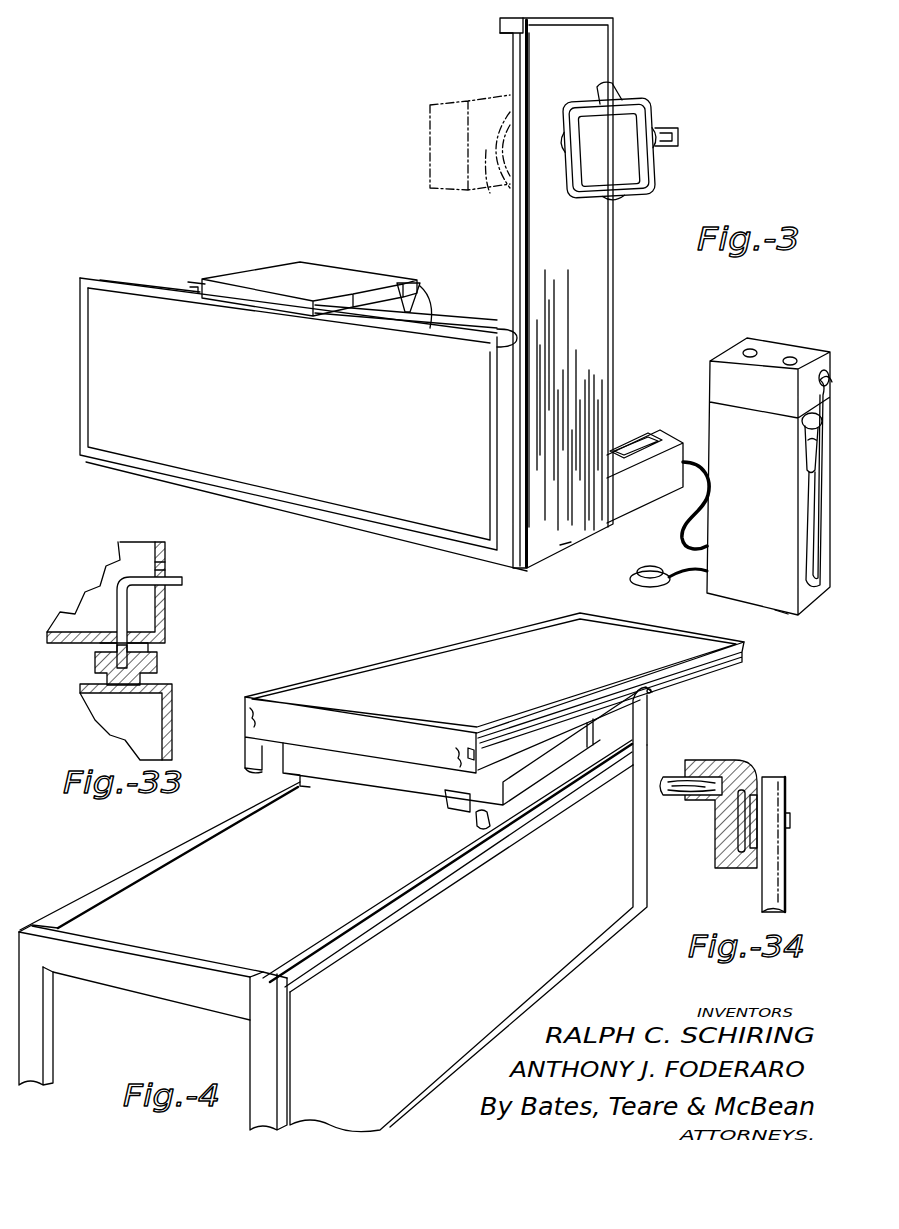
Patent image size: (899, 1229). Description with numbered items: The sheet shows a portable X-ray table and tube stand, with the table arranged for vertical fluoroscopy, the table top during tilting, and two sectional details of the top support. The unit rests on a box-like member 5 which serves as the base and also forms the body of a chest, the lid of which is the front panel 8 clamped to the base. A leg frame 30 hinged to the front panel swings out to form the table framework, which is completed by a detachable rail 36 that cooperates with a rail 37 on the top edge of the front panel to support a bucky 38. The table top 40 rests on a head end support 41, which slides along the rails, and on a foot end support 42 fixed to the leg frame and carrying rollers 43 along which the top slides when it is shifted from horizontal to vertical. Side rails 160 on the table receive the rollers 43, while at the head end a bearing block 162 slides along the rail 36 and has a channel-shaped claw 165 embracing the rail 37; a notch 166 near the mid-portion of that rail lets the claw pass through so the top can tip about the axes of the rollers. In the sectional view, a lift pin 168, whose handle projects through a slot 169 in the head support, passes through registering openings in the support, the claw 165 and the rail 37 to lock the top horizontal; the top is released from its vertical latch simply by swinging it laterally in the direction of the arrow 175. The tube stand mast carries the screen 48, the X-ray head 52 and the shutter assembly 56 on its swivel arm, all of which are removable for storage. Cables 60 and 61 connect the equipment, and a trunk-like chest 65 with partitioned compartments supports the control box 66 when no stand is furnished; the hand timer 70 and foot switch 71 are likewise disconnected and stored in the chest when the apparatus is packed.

In FIG. 3, the box-like member 5 is at (652, 437).
In FIG. 3, the front panel 8 is at (96, 350).
In FIG. 4, the front panel 8 is at (573, 968).
In FIG. 3, the leg frame 30 is at (192, 280).
In FIG. 4, the leg frame 30 is at (33, 1027).
In FIG. 3, the detachable rail 36 is at (455, 318).
In FIG. 4, the detachable rail 36 is at (203, 846).
In FIG. 3, the rail 37 is at (103, 278).
In FIG. 4, the rail 37 is at (415, 864).
In FIG. 33, the rail 37 is at (96, 666).
In FIG. 3, the bucky 38 is at (340, 271).
In FIG. 4, the bucky 38 is at (380, 790).
In FIG. 3, the table top 40 is at (597, 44).
In FIG. 4, the table top 40 is at (470, 647).
In FIG. 33, the table top 40 is at (173, 704).
In FIG. 4, the head end support 41 is at (355, 728).
In FIG. 4, the foot end support 42 is at (650, 709).
In FIG. 34, the rollers 43 is at (748, 807).
In FIG. 3, the screen 48 is at (657, 166).
In FIG. 3, the head 52 is at (430, 153).
In FIG. 3, the shutter assembly 56 is at (490, 193).
In FIG. 3, the cable 60 is at (706, 483).
In FIG. 3, the cable 61 is at (681, 522).
In FIG. 3, the chest 65 is at (775, 612).
In FIG. 3, the control box 66 is at (738, 352).
In FIG. 3, the hand timer 70 is at (806, 453).
In FIG. 3, the foot switch 71 is at (631, 578).
In FIG. 4, the side rails 160 is at (703, 670).
In FIG. 34, the side rails 160 is at (752, 777).
In FIG. 4, the bearing block 162 is at (244, 730).
In FIG. 4, the channel-shaped claw 165 is at (452, 800).
In FIG. 33, the channel-shaped claw 165 is at (158, 661).
In FIG. 4, the notch 166 is at (482, 822).
In FIG. 33, the lift pin 168 is at (182, 580).
In FIG. 4, the slot 169 is at (478, 758).
In FIG. 33, the slot 169 is at (168, 562).
In FIG. 3, the arrow 175 is at (578, 562).